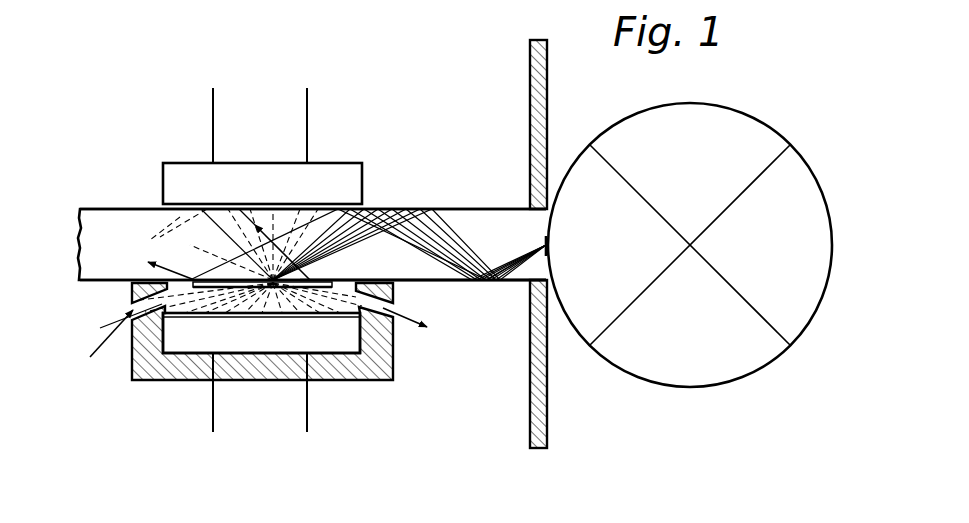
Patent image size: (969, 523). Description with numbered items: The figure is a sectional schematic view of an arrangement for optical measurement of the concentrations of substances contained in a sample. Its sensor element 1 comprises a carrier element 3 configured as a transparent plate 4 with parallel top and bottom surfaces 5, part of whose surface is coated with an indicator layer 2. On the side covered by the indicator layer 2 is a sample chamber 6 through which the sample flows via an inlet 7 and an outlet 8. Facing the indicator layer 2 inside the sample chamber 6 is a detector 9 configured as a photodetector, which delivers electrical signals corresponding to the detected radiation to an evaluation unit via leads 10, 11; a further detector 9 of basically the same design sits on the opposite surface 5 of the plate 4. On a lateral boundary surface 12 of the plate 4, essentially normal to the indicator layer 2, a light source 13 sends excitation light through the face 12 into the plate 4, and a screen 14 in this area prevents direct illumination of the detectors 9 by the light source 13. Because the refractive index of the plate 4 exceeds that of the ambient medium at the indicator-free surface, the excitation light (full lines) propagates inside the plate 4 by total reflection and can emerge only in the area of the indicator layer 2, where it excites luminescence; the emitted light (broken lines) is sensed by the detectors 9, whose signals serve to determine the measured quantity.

The sensor element 1 is at (457, 283).
The indicator layer 2 is at (207, 282).
The carrier element 3 is at (473, 227).
The plate 4 is at (117, 222).
The parallel top and bottom surfaces 5 is at (98, 207).
The sample chamber 6 is at (130, 358).
The inlet 7 is at (117, 347).
The outlet 8 is at (397, 318).
The detector 9 is at (342, 180).
The lead 10 is at (213, 110).
The lead 11 is at (308, 110).
The lateral boundary surface 12 is at (545, 247).
The light source 13 is at (768, 258).
The screen 14 is at (540, 401).